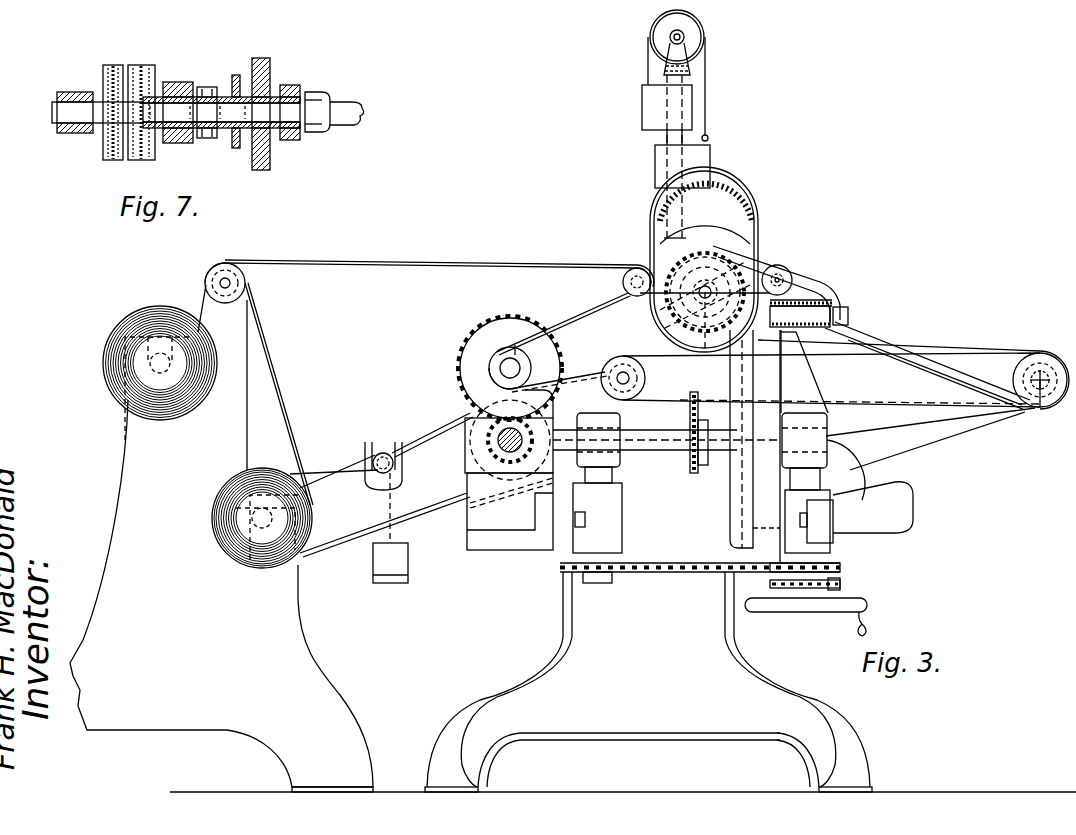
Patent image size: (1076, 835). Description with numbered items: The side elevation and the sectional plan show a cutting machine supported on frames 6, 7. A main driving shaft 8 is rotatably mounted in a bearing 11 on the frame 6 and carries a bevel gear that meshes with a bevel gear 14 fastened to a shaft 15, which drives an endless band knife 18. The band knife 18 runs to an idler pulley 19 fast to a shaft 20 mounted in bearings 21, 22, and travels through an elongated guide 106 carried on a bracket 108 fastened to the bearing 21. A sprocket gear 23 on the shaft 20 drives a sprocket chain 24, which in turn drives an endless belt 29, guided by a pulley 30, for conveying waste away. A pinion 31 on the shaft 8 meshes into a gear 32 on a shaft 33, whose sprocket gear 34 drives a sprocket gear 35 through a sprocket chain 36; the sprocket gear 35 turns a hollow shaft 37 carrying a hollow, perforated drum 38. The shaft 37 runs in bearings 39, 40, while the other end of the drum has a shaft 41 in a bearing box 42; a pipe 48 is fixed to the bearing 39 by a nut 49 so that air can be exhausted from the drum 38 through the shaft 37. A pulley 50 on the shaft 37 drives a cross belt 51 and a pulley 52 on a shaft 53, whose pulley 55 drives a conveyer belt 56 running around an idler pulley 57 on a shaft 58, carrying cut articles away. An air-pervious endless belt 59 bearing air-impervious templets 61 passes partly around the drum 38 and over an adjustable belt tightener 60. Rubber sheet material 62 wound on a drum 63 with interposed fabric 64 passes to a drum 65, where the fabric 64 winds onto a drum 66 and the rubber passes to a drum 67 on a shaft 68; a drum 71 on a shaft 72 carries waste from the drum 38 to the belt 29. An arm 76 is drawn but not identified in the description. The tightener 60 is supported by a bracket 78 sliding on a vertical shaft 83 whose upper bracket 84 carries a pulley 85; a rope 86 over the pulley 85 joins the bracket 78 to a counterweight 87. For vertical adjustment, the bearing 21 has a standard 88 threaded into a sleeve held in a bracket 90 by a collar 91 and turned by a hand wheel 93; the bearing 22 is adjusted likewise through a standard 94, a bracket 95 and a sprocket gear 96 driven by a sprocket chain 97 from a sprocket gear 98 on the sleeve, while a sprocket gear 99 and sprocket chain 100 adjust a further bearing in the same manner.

In FIG. 3, the frame 6 is at (516, 548).
In FIG. 3, the frame 7 is at (352, 714).
In FIG. 3, the main driving shaft 8 is at (487, 446).
In FIG. 3, the bearing 11 is at (500, 456).
In FIG. 3, the bevel gear 14 is at (430, 522).
In FIG. 3, the shaft 15 is at (522, 480).
In FIG. 3, the endless band knife 18 is at (750, 510).
In FIG. 3, the idler pulley 19 is at (735, 546).
In FIG. 3, the shaft 20 is at (672, 452).
In FIG. 3, the bearing 21 is at (822, 430).
In FIG. 3, the bearing 22 is at (590, 415).
In FIG. 3, the sprocket gear 23 is at (702, 455).
In FIG. 3, the sprocket chain 24 is at (694, 473).
In FIG. 3, the endless belt 29 is at (832, 302).
In FIG. 3, the pulley 30 is at (848, 316).
In FIG. 3, the pinion 31 is at (497, 494).
In FIG. 3, the gear 32 is at (470, 372).
In FIG. 3, the shaft 33 is at (492, 356).
In FIG. 3, the sprocket gear 34 is at (518, 346).
In FIG. 7, the sprocket gear 35 is at (236, 76).
In FIG. 3, the sprocket gear 35 is at (665, 308).
In FIG. 3, the sprocket chain 36 is at (554, 322).
In FIG. 7, the hollow shaft 37 is at (222, 138).
In FIG. 3, the hollow shaft 37 is at (672, 322).
In FIG. 7, the drum 38 is at (140, 65).
In FIG. 3, the drum 38 is at (727, 262).
In FIG. 7, the bearing 39 is at (288, 87).
In FIG. 7, the bearing 40 is at (176, 95).
In FIG. 7, the shaft 41 is at (70, 115).
In FIG. 7, the bearing box 42 is at (82, 98).
In FIG. 7, the pipe 48 is at (346, 110).
In FIG. 7, the nut 49 is at (322, 100).
In FIG. 3, the pulley 50 is at (705, 340).
In FIG. 3, the cross belt 51 is at (905, 342).
In FIG. 3, the pulley 52 is at (1012, 378).
In FIG. 3, the shaft 53 is at (640, 388).
In FIG. 3, the pulley 55 is at (1040, 400).
In FIG. 3, the conveyer belt 56 is at (872, 360).
In FIG. 3, the idler pulley 57 is at (640, 378).
In FIG. 7, the shaft 58 is at (112, 135).
In FIG. 3, the endless belt 59 is at (742, 230).
In FIG. 3, the adjustable belt tightener 60 is at (745, 192).
In FIG. 3, the templets 61 is at (754, 202).
In FIG. 3, the sheet of material 62 is at (432, 262).
In FIG. 3, the drum 63 is at (162, 380).
In FIG. 3, the sheet of fabric 64 is at (290, 418).
In FIG. 3, the drum 65 is at (247, 284).
In FIG. 3, the drum 66 is at (258, 540).
In FIG. 3, the drum 67 is at (634, 268).
In FIG. 3, the shaft 68 is at (622, 284).
In FIG. 3, the drum 71 is at (782, 275).
In FIG. 3, the shaft 72 is at (806, 272).
In FIG. 3, the arm 76 is at (733, 257).
In FIG. 3, the bracket 78 is at (707, 162).
In FIG. 3, the vertical shaft 83 is at (668, 140).
In FIG. 3, the bracket 84 is at (688, 60).
In FIG. 3, the pulley 85 is at (700, 32).
In FIG. 3, the rope 86 is at (707, 105).
In FIG. 3, the counterweight 87 is at (650, 108).
In FIG. 3, the vertical standard 88 is at (835, 482).
In FIG. 3, the bracket 90 is at (826, 520).
In FIG. 3, the collar 91 is at (862, 480).
In FIG. 3, the hand wheel 93 is at (790, 606).
In FIG. 3, the standard 94 is at (613, 477).
In FIG. 3, the bracket 95 is at (622, 525).
In FIG. 3, the sprocket gear 96 is at (610, 583).
In FIG. 3, the sprocket chain 97 is at (696, 575).
In FIG. 3, the sprocket gear 98 is at (838, 567).
In FIG. 3, the sprocket gear 99 is at (845, 590).
In FIG. 3, the sprocket chain 100 is at (775, 585).
In FIG. 3, the elongated guide 106 is at (774, 345).
In FIG. 3, the bracket 108 is at (808, 383).